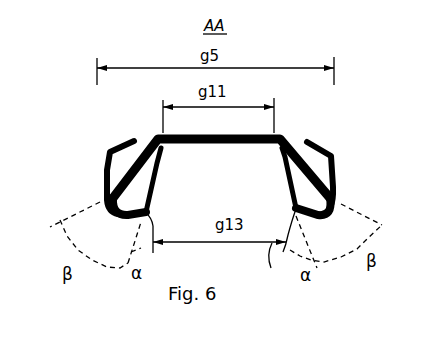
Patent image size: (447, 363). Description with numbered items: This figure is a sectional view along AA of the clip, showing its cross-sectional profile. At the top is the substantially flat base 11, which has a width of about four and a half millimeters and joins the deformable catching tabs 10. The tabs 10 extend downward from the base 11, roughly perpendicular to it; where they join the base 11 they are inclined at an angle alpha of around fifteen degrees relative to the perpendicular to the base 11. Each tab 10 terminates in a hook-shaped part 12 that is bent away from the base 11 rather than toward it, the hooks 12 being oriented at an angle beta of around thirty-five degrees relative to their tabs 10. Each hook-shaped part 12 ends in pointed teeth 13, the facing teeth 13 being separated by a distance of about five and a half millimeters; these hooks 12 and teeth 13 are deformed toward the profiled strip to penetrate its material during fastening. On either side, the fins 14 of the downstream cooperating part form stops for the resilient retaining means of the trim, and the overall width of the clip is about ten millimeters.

The deformable catching tab 10 is at (278, 175).
The base 11 is at (163, 136).
The hook-shaped part 12 is at (292, 202).
The pointed teeth 13 is at (157, 227).
The fin 14 is at (103, 179).